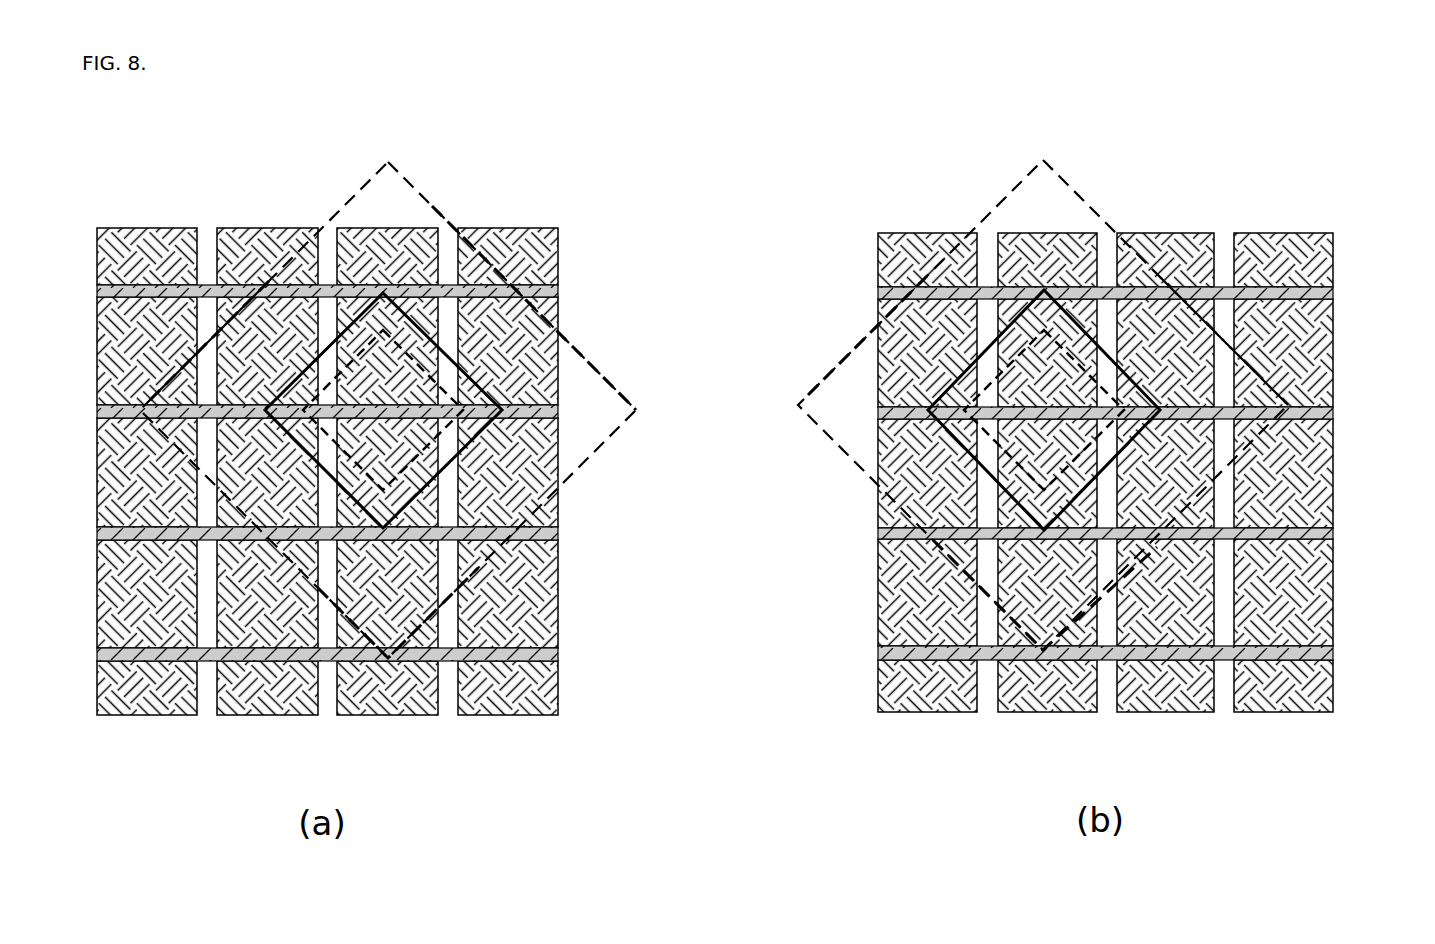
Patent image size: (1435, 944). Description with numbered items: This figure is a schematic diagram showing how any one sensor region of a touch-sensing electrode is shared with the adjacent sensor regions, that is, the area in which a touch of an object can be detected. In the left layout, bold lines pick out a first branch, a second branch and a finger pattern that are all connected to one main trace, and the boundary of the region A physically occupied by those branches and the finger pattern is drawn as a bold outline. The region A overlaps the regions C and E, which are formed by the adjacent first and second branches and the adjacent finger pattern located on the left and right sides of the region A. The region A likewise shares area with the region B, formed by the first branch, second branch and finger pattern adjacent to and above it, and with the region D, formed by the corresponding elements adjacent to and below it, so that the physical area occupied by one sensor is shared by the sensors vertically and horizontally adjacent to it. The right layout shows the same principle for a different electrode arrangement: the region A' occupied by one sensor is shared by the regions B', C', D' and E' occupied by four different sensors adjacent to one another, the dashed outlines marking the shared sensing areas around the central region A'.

The region A is at (434, 402).
The region B is at (388, 386).
The region C is at (209, 271).
The region D is at (398, 677).
The region E is at (496, 348).
The region A' is at (1116, 350).
The region B' is at (1043, 383).
The region C' is at (859, 309).
The region D' is at (1045, 666).
The region E' is at (1178, 383).